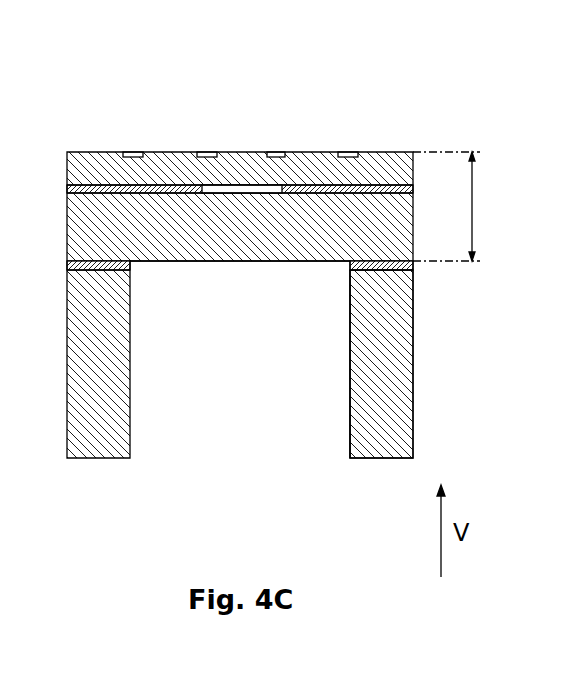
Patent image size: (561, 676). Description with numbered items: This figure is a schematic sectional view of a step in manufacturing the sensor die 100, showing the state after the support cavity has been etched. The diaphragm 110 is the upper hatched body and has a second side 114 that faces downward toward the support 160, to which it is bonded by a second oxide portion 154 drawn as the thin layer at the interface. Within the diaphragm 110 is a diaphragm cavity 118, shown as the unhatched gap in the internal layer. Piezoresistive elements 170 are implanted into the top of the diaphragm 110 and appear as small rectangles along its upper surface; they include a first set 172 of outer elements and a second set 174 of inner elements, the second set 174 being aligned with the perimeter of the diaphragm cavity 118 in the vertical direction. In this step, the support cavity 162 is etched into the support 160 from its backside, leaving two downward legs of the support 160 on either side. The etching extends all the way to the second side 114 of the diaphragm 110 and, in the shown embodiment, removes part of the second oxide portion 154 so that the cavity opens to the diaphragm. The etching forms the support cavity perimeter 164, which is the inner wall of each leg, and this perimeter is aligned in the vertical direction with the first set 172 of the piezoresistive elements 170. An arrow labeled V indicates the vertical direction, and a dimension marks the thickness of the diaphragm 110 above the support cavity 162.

The sensor die 100 is at (280, 266).
The diaphragm 110 is at (473, 197).
The second side 114 is at (290, 262).
The diaphragm cavity 118 is at (219, 186).
The second oxide portion 154 is at (397, 270).
The support 160 is at (400, 350).
The support cavity 162 is at (165, 460).
The support cavity perimeter 164 is at (347, 393).
The piezoresistive elements 170 is at (261, 95).
The first set 172 is at (136, 152).
The second set 174 is at (206, 152).